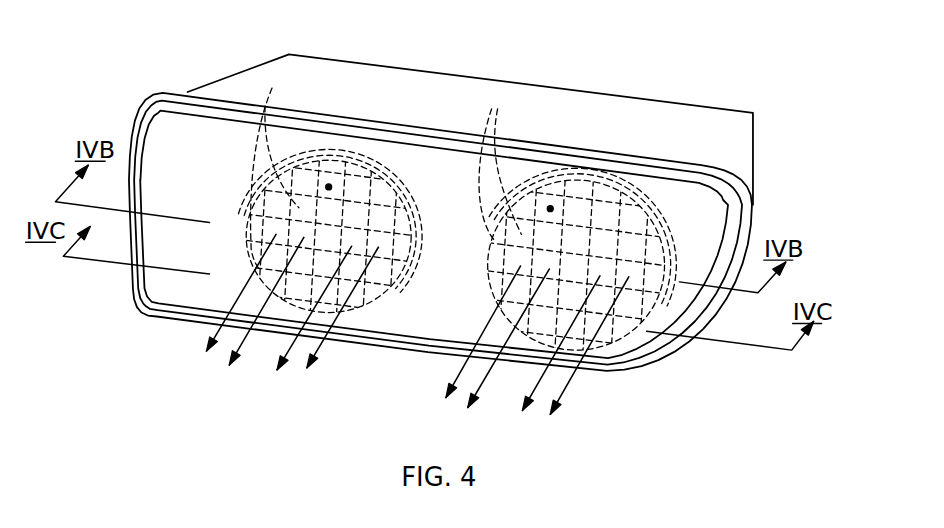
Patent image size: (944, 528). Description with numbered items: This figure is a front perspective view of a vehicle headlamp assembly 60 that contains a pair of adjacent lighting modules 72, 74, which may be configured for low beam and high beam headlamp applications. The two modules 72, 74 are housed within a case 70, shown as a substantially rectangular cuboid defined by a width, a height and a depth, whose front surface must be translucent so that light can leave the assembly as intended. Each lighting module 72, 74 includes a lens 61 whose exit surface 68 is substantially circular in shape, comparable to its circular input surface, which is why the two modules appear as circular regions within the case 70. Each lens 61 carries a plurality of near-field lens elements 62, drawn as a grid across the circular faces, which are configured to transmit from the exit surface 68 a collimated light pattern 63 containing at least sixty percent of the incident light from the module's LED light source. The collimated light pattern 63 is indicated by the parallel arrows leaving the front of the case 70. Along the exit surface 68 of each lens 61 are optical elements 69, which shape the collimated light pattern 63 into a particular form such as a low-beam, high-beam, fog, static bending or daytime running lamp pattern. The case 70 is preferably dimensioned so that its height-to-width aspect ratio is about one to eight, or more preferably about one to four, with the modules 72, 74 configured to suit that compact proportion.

The vehicle headlamp assembly 60 is at (750, 44).
The lens 61 is at (535, 219).
The near-field lens elements 62 is at (410, 190).
The collimated light pattern 63 is at (233, 307).
The exit surface 68 is at (330, 187).
The optical elements 69 is at (386, 168).
The case 70 is at (648, 352).
The lighting module 72 is at (624, 168).
The lighting module 74 is at (365, 130).